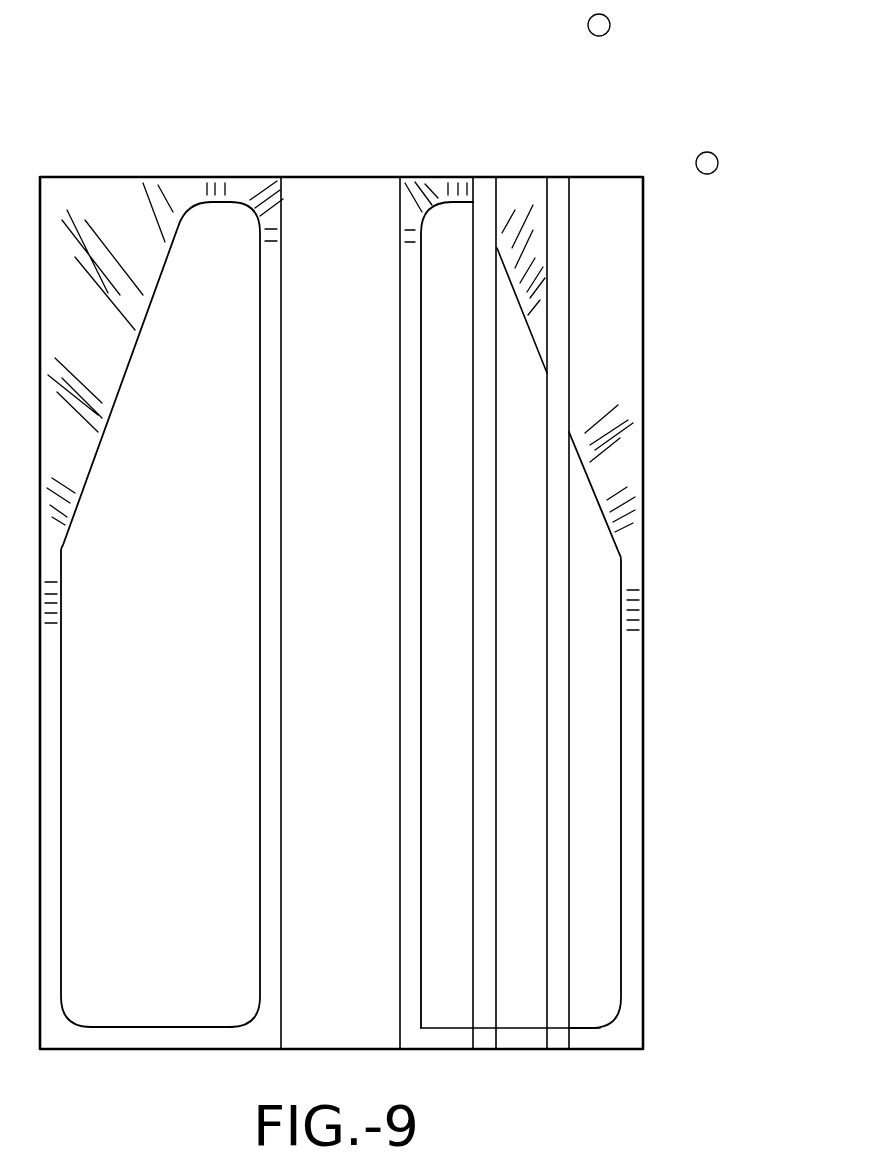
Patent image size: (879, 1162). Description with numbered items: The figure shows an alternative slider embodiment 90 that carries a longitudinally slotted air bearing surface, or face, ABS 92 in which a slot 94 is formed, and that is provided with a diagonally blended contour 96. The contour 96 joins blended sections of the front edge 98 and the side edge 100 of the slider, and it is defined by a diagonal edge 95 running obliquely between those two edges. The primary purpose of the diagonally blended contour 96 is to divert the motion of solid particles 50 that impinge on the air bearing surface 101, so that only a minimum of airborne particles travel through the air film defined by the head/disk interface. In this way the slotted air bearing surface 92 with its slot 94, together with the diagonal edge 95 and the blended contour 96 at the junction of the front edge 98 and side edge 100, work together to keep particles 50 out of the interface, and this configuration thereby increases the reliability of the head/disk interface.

The solid particles 50 is at (703, 153).
The slider embodiment 90 is at (657, 1045).
The air bearing surface 92 is at (594, 948).
The slot 94 is at (487, 893).
The diagonal edge 95 is at (578, 450).
The diagonally blended contour 96 is at (627, 484).
The front edge 98 is at (462, 202).
The side edge 100 is at (621, 657).
The air bearing surface 101 is at (517, 783).